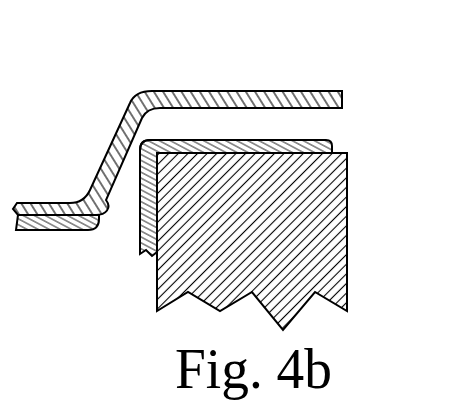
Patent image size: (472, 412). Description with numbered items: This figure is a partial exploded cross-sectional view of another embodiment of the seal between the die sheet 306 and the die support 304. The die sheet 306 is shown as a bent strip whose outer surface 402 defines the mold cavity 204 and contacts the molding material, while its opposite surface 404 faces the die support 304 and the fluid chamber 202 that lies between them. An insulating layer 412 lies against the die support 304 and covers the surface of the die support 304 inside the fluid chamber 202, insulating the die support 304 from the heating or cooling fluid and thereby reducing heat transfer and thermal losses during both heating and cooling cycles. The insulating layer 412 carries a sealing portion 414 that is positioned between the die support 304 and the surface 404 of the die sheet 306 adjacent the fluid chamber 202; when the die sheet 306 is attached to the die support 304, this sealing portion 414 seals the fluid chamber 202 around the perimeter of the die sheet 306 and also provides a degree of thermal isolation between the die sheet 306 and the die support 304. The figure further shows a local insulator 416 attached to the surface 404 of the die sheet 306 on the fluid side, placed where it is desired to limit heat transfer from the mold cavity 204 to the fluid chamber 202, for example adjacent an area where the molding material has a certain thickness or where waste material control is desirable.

The fluid chamber 202 is at (130, 294).
The mold cavity 204 is at (70, 177).
The die support 304 is at (348, 178).
The die sheet 306 is at (291, 91).
The die sheet surface defining the mold cavity 402 is at (125, 108).
The die sheet surface adjacent the fluid chamber 404 is at (325, 109).
The insulating layer 412 is at (138, 238).
The sealing portion 414 is at (300, 140).
The local insulator 416 is at (30, 233).